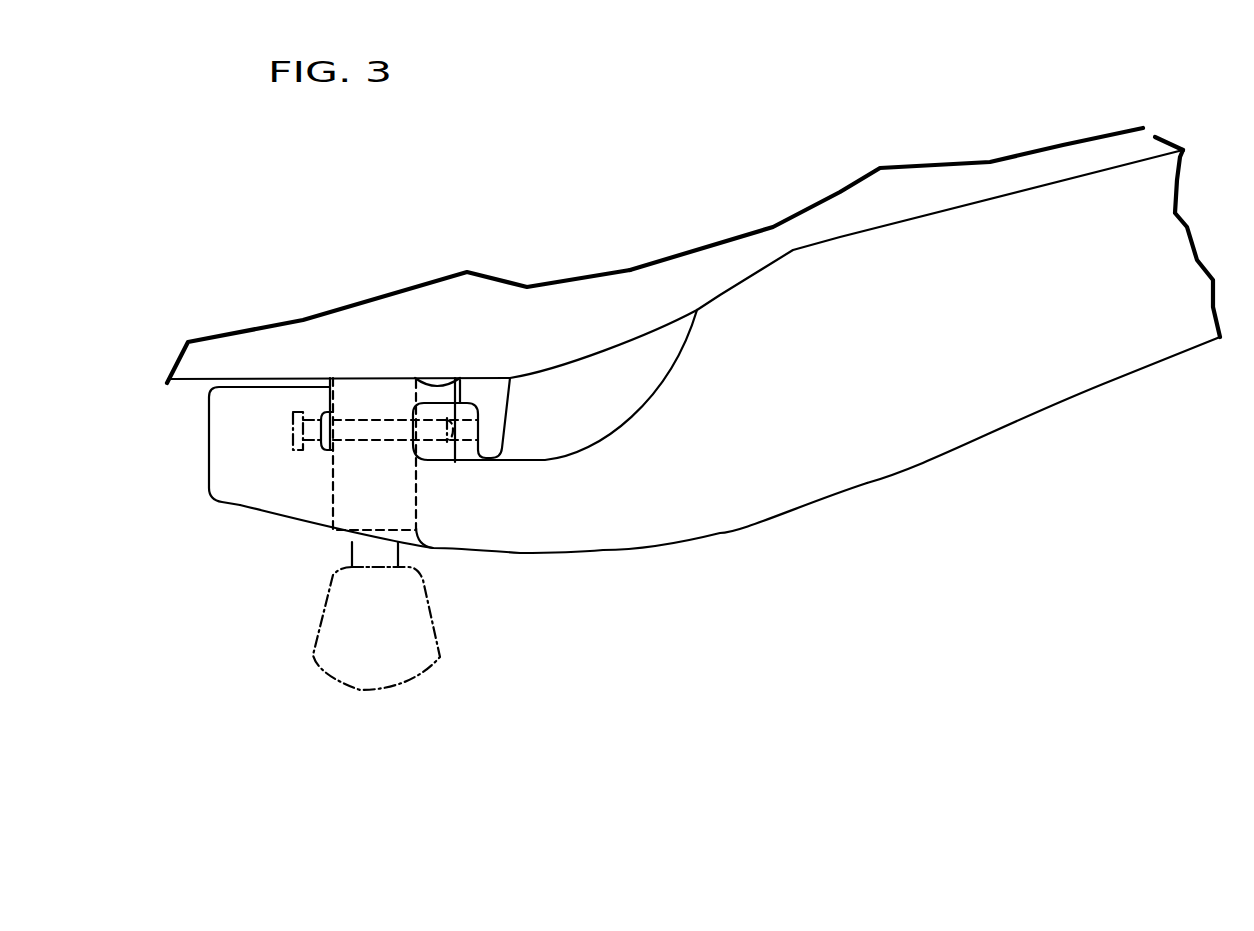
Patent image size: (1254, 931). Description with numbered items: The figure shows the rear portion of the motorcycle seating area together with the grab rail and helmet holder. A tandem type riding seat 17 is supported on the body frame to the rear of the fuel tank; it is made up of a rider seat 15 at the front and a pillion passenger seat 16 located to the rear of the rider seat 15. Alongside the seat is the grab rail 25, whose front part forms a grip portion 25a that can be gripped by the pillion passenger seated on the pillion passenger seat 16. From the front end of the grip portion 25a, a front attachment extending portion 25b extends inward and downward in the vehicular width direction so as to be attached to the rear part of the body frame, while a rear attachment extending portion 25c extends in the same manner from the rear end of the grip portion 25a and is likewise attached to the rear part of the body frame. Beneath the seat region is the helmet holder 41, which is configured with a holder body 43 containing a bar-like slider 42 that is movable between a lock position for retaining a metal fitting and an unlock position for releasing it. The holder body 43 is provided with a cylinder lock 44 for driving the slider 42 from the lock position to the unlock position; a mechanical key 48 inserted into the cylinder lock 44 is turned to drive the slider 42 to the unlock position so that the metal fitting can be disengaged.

The rider seat 15 is at (355, 318).
The pillion passenger seat 16 is at (848, 205).
The tandem type riding seat 17 is at (580, 357).
The grab rail 25 is at (866, 482).
The grip portion 25a is at (573, 540).
The front attachment extending portion 25b is at (220, 406).
The rear attachment extending portion 25c is at (733, 312).
The helmet holder 41 is at (335, 485).
The slider 42 is at (463, 433).
The holder body 43 is at (495, 418).
The cylinder lock 44 is at (420, 492).
The mechanical key 48 is at (353, 692).